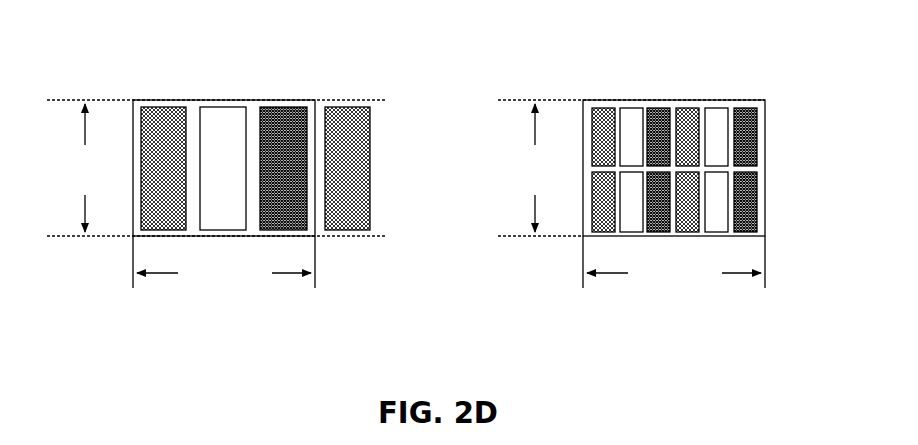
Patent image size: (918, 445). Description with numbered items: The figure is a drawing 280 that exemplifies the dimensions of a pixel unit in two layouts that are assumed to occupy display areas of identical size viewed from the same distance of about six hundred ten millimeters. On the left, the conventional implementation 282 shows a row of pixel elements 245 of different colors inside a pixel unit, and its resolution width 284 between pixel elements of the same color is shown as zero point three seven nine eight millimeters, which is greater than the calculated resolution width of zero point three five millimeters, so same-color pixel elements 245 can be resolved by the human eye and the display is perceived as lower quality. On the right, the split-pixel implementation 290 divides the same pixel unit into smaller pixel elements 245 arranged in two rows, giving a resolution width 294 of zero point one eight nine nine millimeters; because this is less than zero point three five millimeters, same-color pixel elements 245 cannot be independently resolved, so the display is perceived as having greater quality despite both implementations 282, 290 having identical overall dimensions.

The drawing 280 is at (79, 19).
The conventional implementation 282 is at (216, 196).
The resolution width 284 is at (237, 43).
The split-pixel implementation 290 is at (662, 200).
The resolution width 294 is at (592, 100).
The pixel elements 245 is at (747, 130).